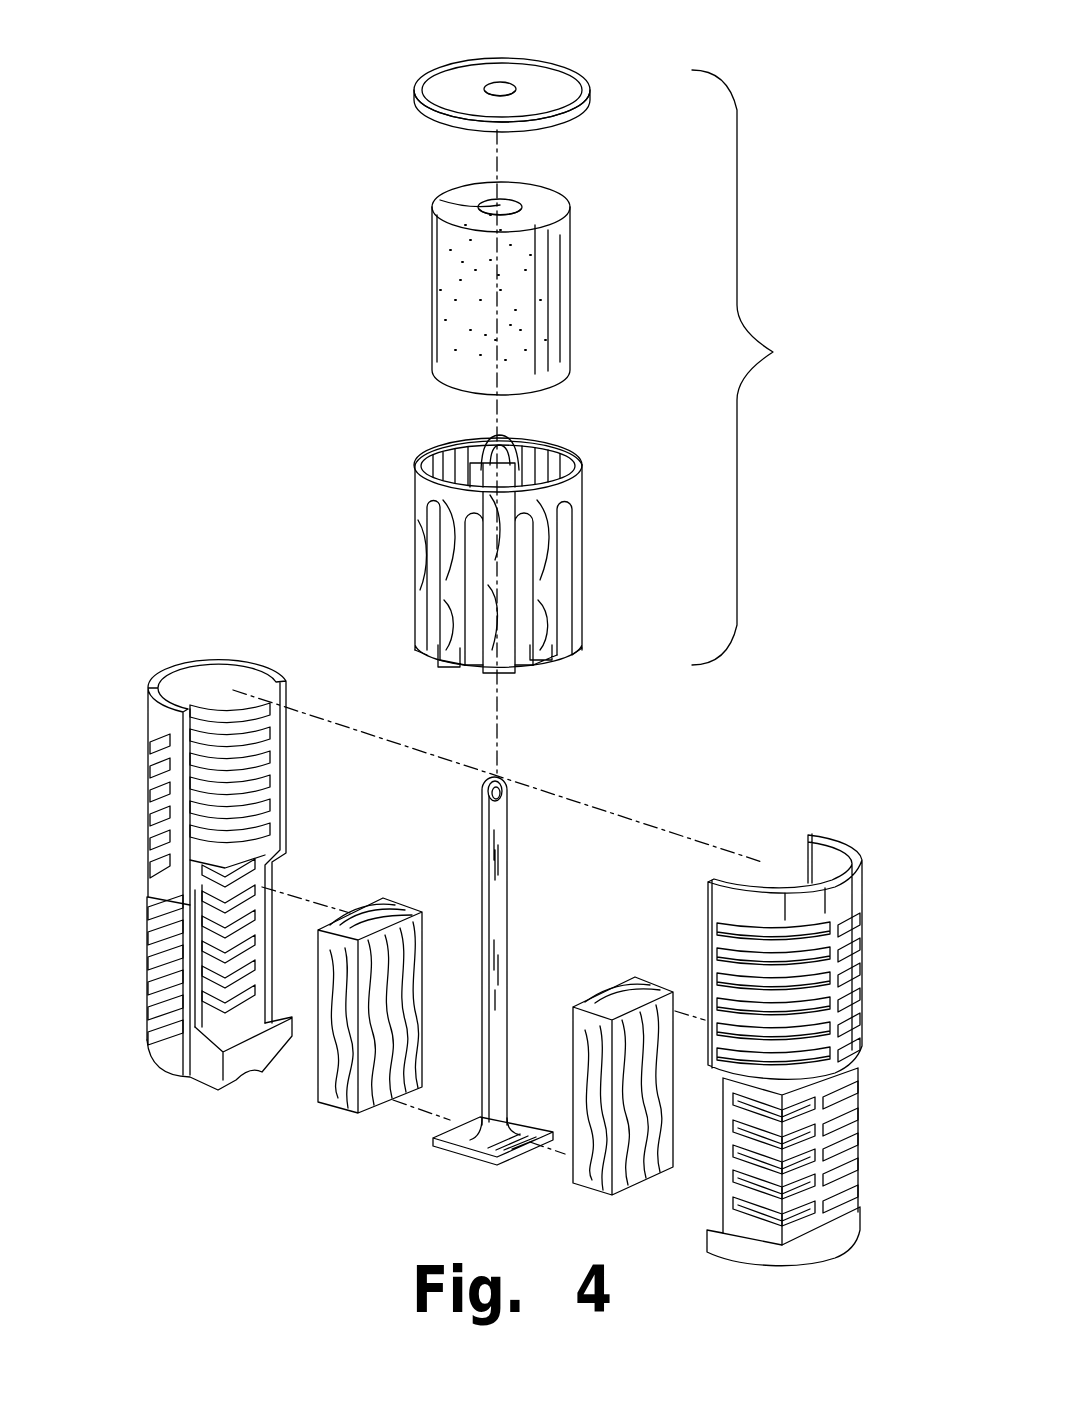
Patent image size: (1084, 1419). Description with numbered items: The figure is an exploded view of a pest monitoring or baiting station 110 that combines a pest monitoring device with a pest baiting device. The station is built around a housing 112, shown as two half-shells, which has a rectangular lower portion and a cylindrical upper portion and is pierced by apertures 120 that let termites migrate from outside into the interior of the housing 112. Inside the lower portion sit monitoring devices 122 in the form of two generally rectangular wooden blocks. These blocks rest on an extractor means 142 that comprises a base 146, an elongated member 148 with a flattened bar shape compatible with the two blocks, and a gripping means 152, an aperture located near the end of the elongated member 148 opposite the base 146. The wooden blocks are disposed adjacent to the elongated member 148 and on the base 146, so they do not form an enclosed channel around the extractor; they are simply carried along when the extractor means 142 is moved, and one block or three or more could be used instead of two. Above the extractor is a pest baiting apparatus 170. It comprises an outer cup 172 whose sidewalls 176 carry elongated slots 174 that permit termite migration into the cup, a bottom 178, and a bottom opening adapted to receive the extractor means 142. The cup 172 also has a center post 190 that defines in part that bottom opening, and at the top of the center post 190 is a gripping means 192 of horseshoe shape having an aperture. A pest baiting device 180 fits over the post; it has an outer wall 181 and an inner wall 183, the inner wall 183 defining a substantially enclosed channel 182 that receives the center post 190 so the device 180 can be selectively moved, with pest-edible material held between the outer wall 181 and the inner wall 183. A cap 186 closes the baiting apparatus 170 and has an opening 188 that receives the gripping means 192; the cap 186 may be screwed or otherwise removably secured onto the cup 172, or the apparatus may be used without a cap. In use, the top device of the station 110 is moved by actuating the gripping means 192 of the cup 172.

The pest monitoring or baiting station 110 is at (876, 189).
The housing 112 is at (514, 940).
The apertures 120 is at (155, 826).
The monitoring devices 122 is at (343, 1099).
The extractor means 142 is at (546, 982).
The base 146 is at (486, 1147).
The elongated member 148 is at (506, 1002).
The gripping means 152 is at (507, 786).
The pest baiting apparatus 170 is at (759, 367).
The cup 172 is at (515, 548).
The elongated slots 174 is at (520, 578).
The sidewalls 176 is at (582, 487).
The bottom 178 is at (550, 676).
The pest baiting device 180 is at (462, 269).
The outer wall 181 is at (433, 276).
The channel 182 is at (448, 208).
The inner wall 183 is at (505, 204).
The cap 186 is at (570, 90).
The opening 188 is at (502, 86).
The center post 190 is at (522, 468).
The gripping means 192 is at (482, 440).